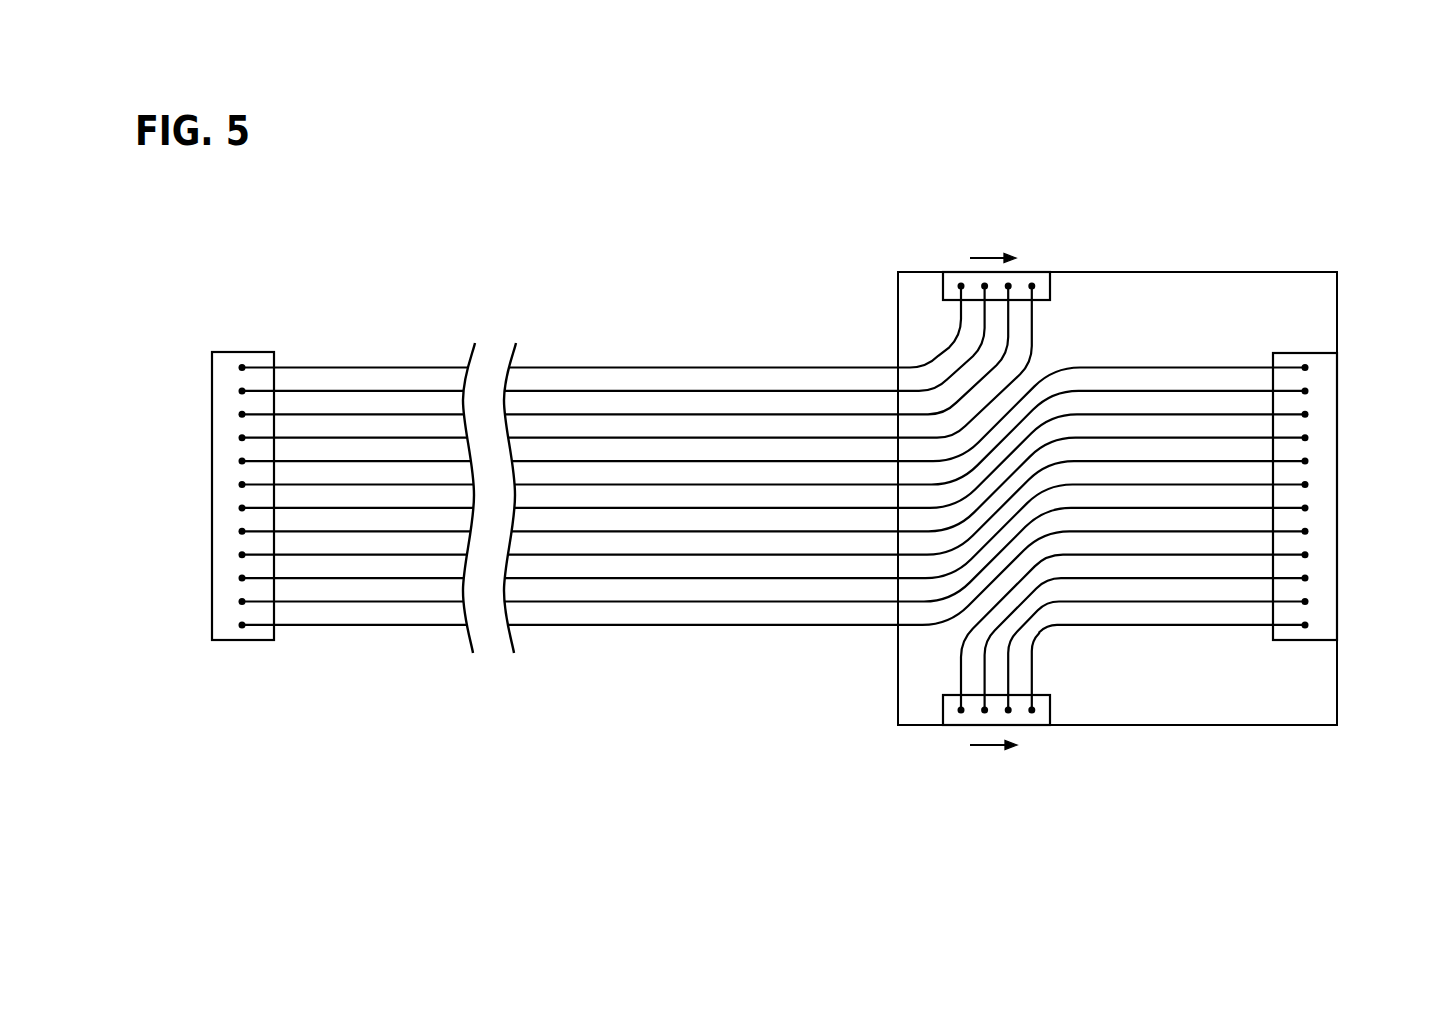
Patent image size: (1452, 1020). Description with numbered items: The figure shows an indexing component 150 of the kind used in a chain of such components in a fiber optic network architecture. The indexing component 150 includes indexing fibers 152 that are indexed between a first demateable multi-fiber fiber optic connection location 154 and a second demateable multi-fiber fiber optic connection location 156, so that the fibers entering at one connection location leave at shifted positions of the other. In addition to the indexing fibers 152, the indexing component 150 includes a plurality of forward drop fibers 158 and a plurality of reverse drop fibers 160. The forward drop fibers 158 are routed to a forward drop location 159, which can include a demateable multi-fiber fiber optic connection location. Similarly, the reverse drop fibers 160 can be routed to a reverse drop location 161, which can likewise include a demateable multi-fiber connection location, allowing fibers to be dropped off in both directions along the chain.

The indexing component 150 is at (543, 245).
The indexing fibers 152 is at (587, 578).
The first demateable multi-fiber fiber optic connection location 154 is at (241, 640).
The second demateable multi-fiber fiber optic connection location 156 is at (1305, 353).
The forward drop fibers 158 is at (1032, 343).
The forward drop location 159 is at (1050, 283).
The reverse drop fibers 160 is at (1155, 628).
The reverse drop location 161 is at (1043, 717).